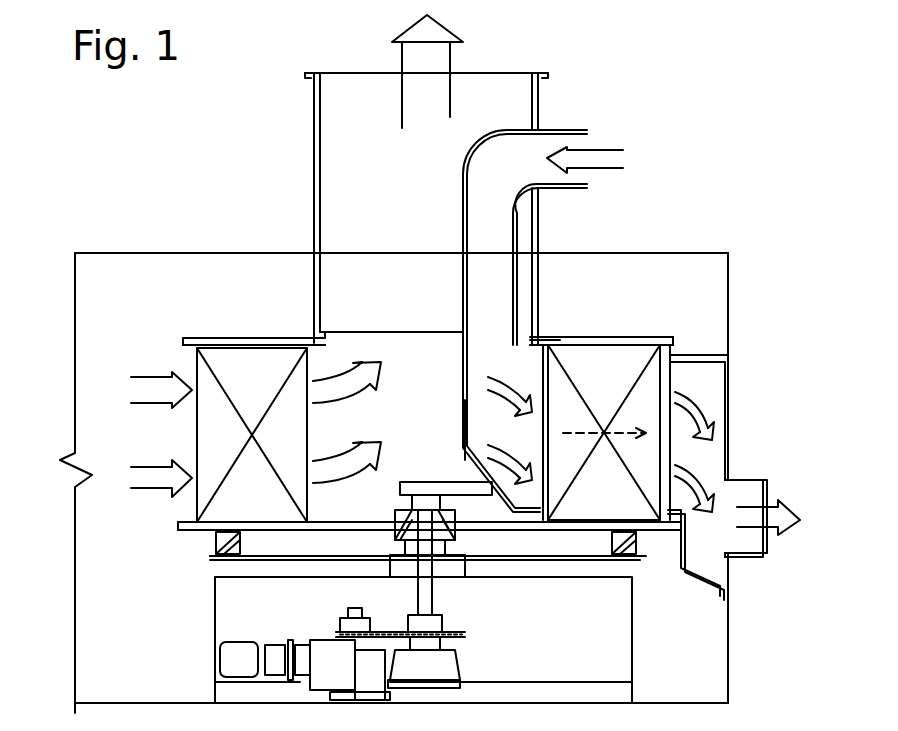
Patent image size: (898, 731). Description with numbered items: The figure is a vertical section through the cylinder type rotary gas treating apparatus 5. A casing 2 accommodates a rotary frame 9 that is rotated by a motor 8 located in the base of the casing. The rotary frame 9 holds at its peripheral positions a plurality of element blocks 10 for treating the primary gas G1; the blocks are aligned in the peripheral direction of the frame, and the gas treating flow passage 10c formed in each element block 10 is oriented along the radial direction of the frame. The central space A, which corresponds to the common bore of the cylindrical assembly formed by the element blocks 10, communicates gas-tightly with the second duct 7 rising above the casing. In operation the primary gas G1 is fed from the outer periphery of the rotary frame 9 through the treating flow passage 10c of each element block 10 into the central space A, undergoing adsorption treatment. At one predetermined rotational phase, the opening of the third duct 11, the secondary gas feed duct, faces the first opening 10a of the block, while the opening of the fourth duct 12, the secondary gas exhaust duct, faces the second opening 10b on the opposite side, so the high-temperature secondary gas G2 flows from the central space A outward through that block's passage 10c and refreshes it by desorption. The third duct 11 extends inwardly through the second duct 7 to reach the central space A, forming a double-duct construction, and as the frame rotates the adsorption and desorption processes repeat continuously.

The casing 2 is at (166, 252).
The cylinder type rotary gas treating apparatus 5 is at (240, 333).
The second duct 7 is at (314, 147).
The motor 8 is at (220, 647).
The rotary frame 9 is at (293, 530).
The element block 10 is at (225, 370).
The first opening 10a is at (540, 427).
The second opening 10b is at (668, 445).
The treating flow passage 10c is at (601, 428).
The third duct 11 is at (462, 233).
The fourth duct 12 is at (757, 560).
The primary gas G1 is at (147, 400).
The secondary gas G2 is at (610, 161).
The central space A is at (421, 365).